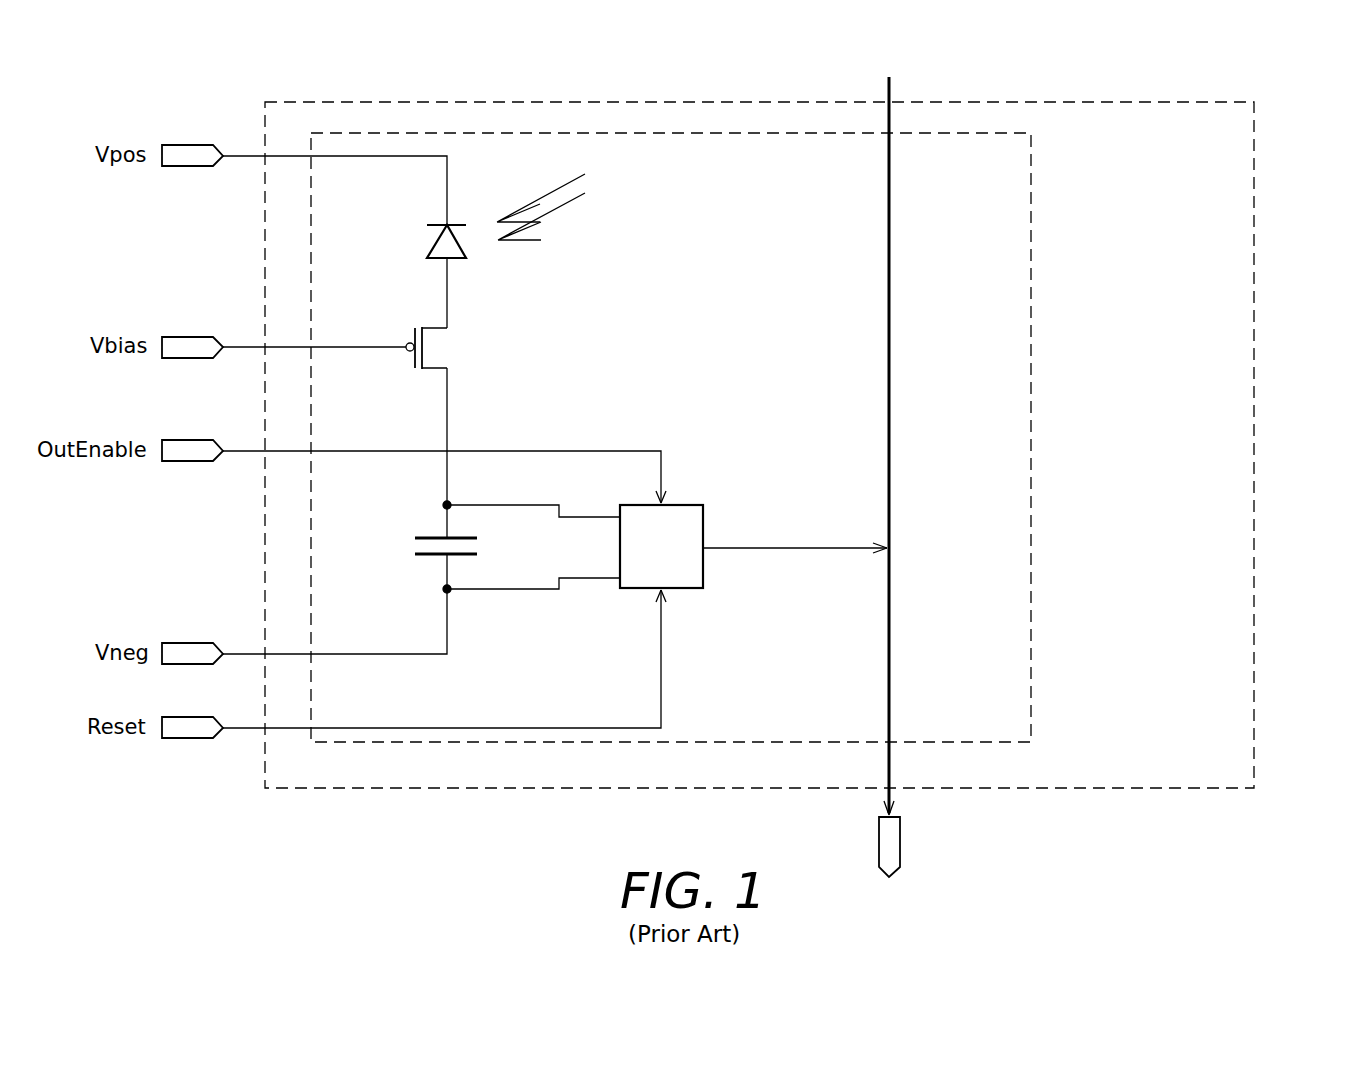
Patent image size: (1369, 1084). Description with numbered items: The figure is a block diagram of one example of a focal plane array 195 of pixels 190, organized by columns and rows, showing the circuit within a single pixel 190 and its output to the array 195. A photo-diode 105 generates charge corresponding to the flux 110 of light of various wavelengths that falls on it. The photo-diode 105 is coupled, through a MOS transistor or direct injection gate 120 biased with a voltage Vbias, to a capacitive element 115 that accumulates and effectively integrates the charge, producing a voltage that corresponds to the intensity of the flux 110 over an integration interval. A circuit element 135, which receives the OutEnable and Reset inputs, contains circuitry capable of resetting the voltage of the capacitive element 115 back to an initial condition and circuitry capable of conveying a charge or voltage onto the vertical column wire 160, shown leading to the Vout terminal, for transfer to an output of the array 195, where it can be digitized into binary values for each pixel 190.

The photo-diode 105 is at (437, 238).
The flux 110 is at (552, 208).
The capacitive element 115 is at (430, 537).
The direct injection gate 120 is at (435, 362).
The circuit element 135 is at (703, 511).
The output column line 160 is at (890, 332).
The pixel 190 is at (1033, 247).
The array 195 is at (1256, 176).